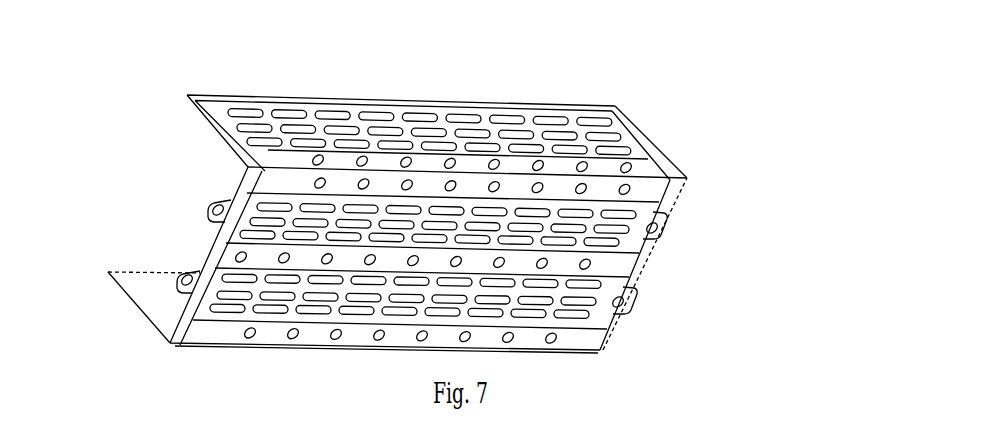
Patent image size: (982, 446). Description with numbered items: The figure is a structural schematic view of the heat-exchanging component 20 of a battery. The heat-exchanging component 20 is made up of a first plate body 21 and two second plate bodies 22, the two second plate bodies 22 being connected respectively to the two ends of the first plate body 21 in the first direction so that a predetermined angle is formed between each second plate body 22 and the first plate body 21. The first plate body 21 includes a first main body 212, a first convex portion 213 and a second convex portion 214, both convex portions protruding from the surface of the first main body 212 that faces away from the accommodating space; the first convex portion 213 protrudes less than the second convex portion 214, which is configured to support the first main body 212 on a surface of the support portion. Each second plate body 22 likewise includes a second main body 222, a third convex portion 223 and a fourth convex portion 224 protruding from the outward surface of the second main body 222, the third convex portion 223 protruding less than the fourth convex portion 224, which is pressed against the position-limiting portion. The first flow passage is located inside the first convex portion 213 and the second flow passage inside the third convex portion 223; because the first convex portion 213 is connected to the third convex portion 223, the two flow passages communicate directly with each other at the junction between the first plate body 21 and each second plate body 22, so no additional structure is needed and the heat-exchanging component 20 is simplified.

The heat-exchanging component 20 is at (78, 60).
The first plate body 21 is at (494, 260).
The first main body 212 is at (770, 187).
The first convex portion 213 is at (654, 193).
The second convex portion 214 is at (664, 228).
The second plate body 22 is at (420, 194).
The second main body 222 is at (624, 112).
The third convex portion 223 is at (498, 144).
The fourth convex portion 224 is at (634, 152).